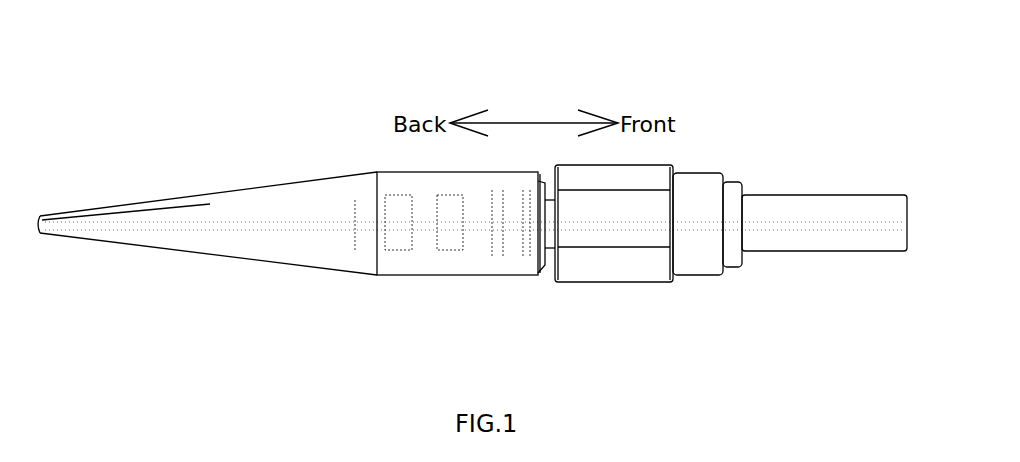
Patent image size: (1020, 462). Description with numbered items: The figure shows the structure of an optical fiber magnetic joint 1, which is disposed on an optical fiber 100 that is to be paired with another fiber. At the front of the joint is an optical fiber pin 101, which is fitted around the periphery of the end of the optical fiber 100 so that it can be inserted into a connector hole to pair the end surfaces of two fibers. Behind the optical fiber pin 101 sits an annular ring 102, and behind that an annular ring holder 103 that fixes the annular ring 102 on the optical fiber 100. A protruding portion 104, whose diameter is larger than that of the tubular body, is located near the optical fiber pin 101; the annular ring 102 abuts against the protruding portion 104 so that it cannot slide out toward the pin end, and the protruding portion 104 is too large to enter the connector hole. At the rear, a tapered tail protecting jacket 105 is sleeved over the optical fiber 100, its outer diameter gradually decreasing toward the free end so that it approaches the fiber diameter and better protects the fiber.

The optical fiber magnetic joint 1 is at (103, 146).
The optical fiber 100 is at (802, 226).
The optical fiber pin 101 is at (807, 252).
The annular ring 102 is at (697, 276).
The annular ring holder 103 is at (595, 282).
The protruding portion 104 is at (740, 268).
The tail protecting jacket 105 is at (403, 275).